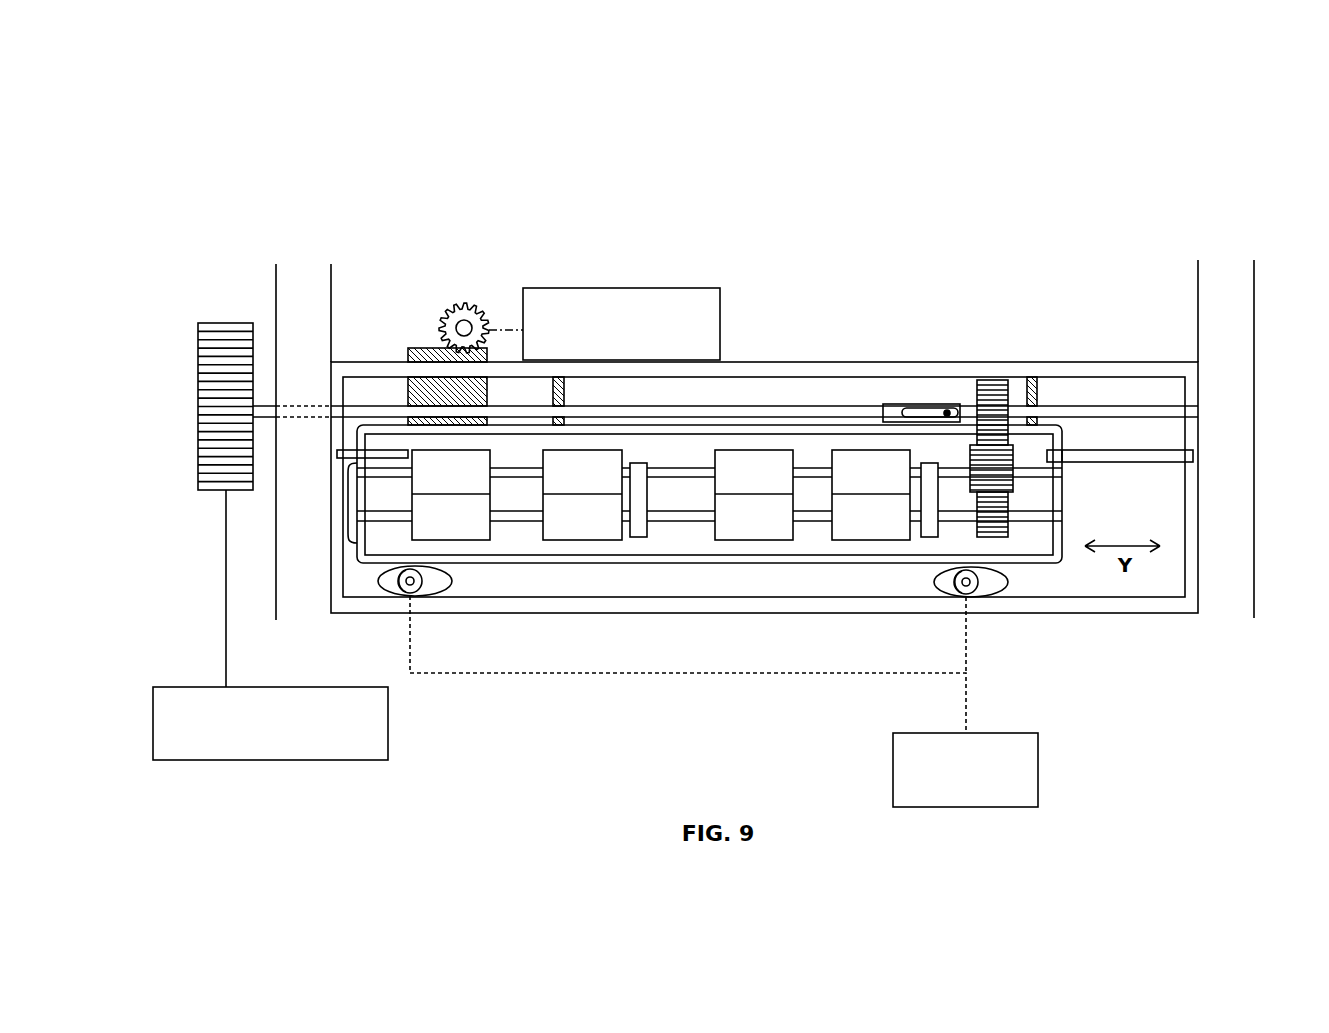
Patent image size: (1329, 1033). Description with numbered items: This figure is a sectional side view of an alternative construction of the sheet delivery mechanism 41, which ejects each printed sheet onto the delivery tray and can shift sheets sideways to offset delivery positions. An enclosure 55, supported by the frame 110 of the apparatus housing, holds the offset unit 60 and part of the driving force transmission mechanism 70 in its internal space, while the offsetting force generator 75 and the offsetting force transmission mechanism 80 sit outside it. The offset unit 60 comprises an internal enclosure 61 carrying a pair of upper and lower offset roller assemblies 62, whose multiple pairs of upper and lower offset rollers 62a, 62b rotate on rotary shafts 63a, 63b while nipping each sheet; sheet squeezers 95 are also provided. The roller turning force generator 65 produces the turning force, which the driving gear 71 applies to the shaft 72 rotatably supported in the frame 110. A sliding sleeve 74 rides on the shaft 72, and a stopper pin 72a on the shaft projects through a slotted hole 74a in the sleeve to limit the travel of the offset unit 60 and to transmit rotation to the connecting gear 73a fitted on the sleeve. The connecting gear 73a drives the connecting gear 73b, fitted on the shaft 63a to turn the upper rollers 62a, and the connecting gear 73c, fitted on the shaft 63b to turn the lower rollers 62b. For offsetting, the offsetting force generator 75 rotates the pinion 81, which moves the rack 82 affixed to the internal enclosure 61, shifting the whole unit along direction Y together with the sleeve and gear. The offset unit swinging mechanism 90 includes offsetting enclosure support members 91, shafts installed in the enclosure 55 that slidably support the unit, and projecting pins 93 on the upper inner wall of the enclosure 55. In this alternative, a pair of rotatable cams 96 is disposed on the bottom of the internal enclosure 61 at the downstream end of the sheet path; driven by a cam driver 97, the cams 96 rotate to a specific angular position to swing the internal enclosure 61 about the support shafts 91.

The sheet delivery mechanism 41 is at (1061, 160).
The frame 110 is at (302, 273).
The enclosure 55 is at (1142, 612).
The driving force transmission mechanism 70 is at (150, 377).
The driving gear 71 is at (227, 322).
The shaft 72 is at (617, 415).
The stopper pin 72a is at (947, 410).
The offsetting force transmission mechanism 80 is at (350, 257).
The pinion 81 is at (450, 310).
The rack 82 is at (412, 348).
The offsetting force generator 75 is at (608, 288).
The projecting pins 93 is at (567, 397).
The sliding sleeve 74 is at (880, 407).
The slotted hole 74a is at (922, 410).
The connecting gear 73a is at (990, 380).
The connecting gear 73b is at (1002, 483).
The connecting gear 73c is at (1003, 536).
The offset unit swinging mechanism 90 is at (1127, 305).
The offsetting enclosure support members 91 is at (337, 457).
The internal enclosure 61 is at (1050, 562).
The offset roller assemblies 62 is at (348, 497).
The upper offset rollers 62a is at (546, 465).
The lower offset rollers 62b is at (546, 508).
The rotary shaft 63a is at (658, 467).
The rotary shaft 63b is at (658, 512).
The sheet squeezers 95 is at (640, 537).
The rotatable cams 96 is at (442, 582).
The roller turning force generator 65 is at (390, 727).
The cam driver 97 is at (1040, 757).
The offset unit 60 is at (1263, 428).